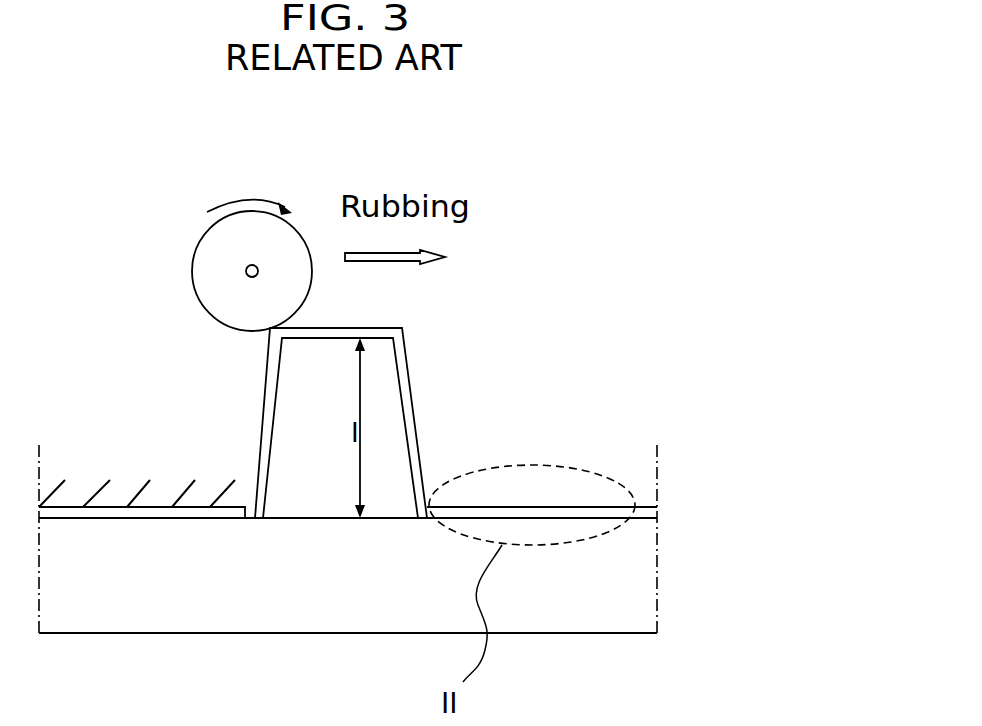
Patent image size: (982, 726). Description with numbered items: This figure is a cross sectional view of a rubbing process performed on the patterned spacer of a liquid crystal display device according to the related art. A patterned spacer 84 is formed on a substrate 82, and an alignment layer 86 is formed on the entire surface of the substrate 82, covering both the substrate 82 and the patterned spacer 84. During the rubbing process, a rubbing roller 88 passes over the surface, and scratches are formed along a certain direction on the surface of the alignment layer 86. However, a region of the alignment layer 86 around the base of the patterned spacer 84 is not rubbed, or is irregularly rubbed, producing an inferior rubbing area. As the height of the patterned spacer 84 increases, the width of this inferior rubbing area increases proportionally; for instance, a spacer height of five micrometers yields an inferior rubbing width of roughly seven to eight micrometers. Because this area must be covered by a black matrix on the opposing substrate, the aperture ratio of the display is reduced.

The substrate 82 is at (632, 580).
The patterned spacer 84 is at (283, 443).
The alignment layer 86 is at (271, 380).
The rubbing roller 88 is at (205, 268).